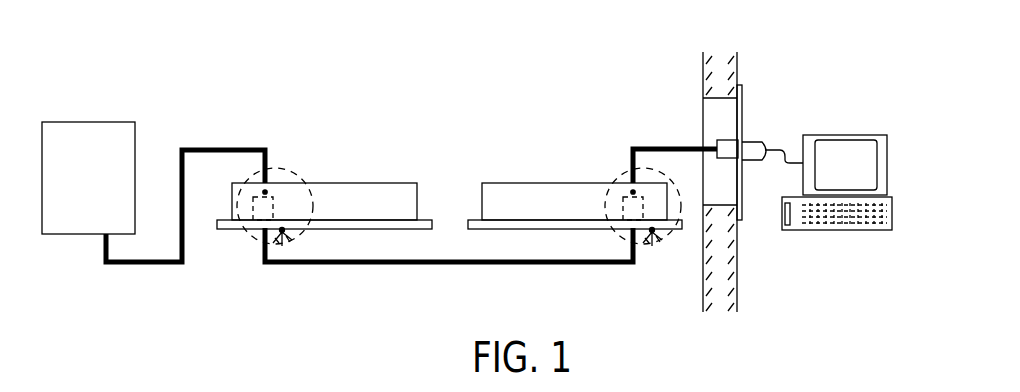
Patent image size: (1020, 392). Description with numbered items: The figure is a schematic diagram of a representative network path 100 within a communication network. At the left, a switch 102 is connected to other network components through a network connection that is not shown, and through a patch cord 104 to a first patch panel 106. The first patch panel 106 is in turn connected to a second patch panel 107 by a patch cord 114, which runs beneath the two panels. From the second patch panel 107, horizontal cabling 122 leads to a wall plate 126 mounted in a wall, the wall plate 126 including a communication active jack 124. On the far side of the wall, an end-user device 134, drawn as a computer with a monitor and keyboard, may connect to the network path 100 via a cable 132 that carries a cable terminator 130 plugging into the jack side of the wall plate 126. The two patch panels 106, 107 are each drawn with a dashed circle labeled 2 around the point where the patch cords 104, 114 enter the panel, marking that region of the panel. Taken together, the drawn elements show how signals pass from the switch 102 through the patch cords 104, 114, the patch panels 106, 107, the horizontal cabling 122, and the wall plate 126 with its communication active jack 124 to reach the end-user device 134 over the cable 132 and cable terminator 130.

The network path 100 is at (548, 73).
The switch 102 is at (134, 122).
The patch cord 104 is at (230, 150).
The first patch panel 106 is at (375, 183).
The second patch panel 107 is at (497, 183).
The patch cord 114 is at (500, 266).
The horizontal cabling 122 is at (643, 145).
The communication active jack 124 is at (727, 141).
The wall plate 126 is at (741, 135).
The cable terminator 130 is at (762, 138).
The cable 132 is at (783, 165).
The end-user device 134 is at (880, 135).
The sensor detail (FIG. 2) 2 is at (306, 168).